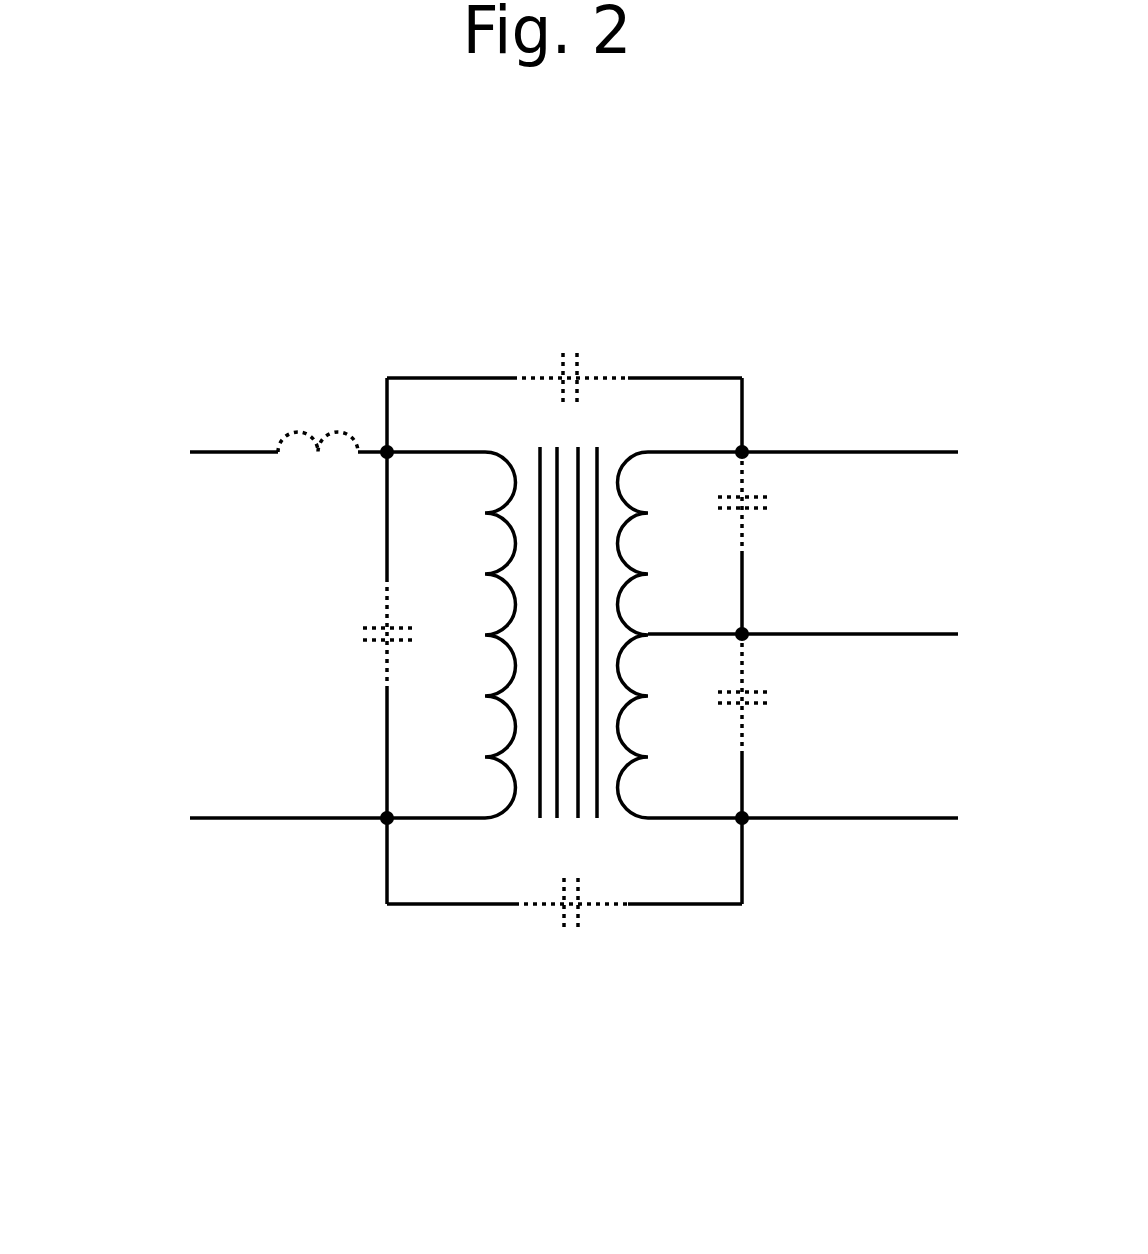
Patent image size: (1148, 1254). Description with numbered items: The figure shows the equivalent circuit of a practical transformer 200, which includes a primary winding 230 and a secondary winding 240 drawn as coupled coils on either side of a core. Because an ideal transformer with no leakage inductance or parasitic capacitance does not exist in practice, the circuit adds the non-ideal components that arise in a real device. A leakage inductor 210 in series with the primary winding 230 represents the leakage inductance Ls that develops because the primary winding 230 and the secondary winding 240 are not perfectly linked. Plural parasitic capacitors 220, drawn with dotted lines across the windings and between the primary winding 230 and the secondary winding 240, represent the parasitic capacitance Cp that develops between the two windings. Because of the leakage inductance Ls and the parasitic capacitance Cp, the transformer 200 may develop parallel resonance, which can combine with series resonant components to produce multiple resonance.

The transformer 200 is at (276, 982).
The leakage inductor 210 is at (341, 370).
The parasitic capacitors 220 is at (596, 352).
The primary winding 230 is at (460, 601).
The secondary winding 240 is at (715, 599).